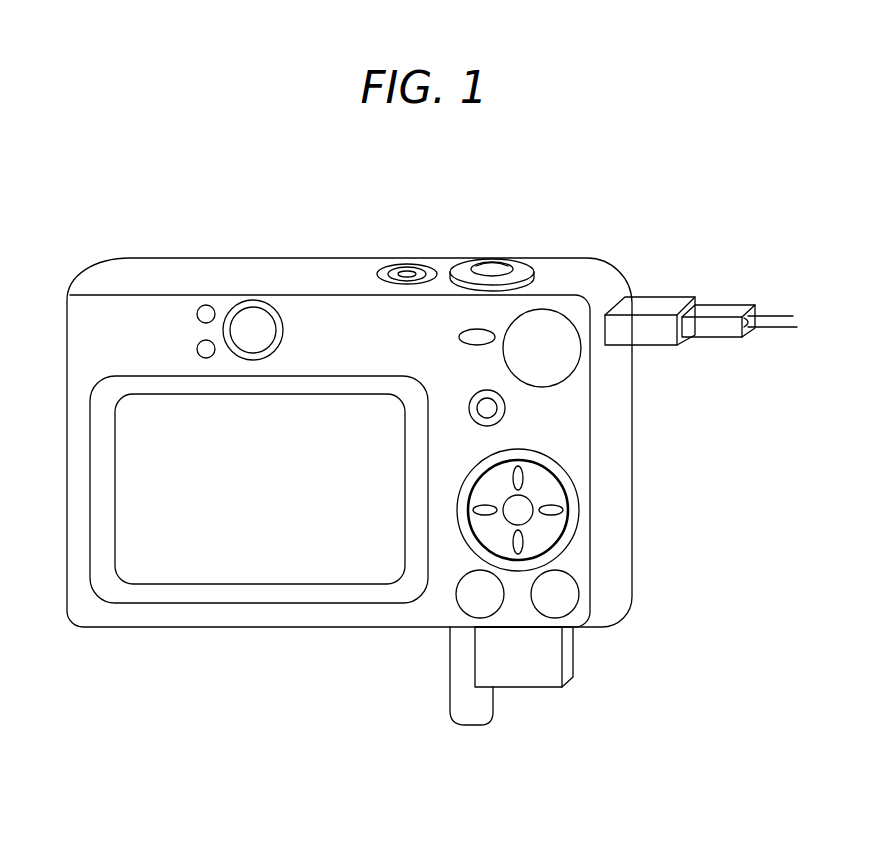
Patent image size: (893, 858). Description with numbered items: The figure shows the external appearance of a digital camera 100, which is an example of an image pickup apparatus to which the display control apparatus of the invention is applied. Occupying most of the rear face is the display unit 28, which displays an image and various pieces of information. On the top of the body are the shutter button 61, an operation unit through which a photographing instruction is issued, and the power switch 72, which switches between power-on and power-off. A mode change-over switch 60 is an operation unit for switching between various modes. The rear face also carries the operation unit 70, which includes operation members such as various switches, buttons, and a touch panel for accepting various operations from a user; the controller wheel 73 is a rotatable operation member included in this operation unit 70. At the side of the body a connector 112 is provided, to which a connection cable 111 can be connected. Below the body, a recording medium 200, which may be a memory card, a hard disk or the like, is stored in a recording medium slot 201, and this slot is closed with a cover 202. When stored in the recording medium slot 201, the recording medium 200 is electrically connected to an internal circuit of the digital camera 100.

The digital camera 100 is at (157, 652).
The display unit 28 is at (173, 413).
The mode change-over switch 60 is at (562, 323).
The shutter button 61 is at (503, 266).
The operation unit 70 is at (502, 283).
The power switch 72 is at (408, 271).
The controller wheel 73 is at (473, 466).
The connection cable 111 is at (722, 307).
The connector 112 is at (618, 306).
The recording medium 200 is at (520, 675).
The recording medium slot 201 is at (523, 630).
The cover 202 is at (458, 700).